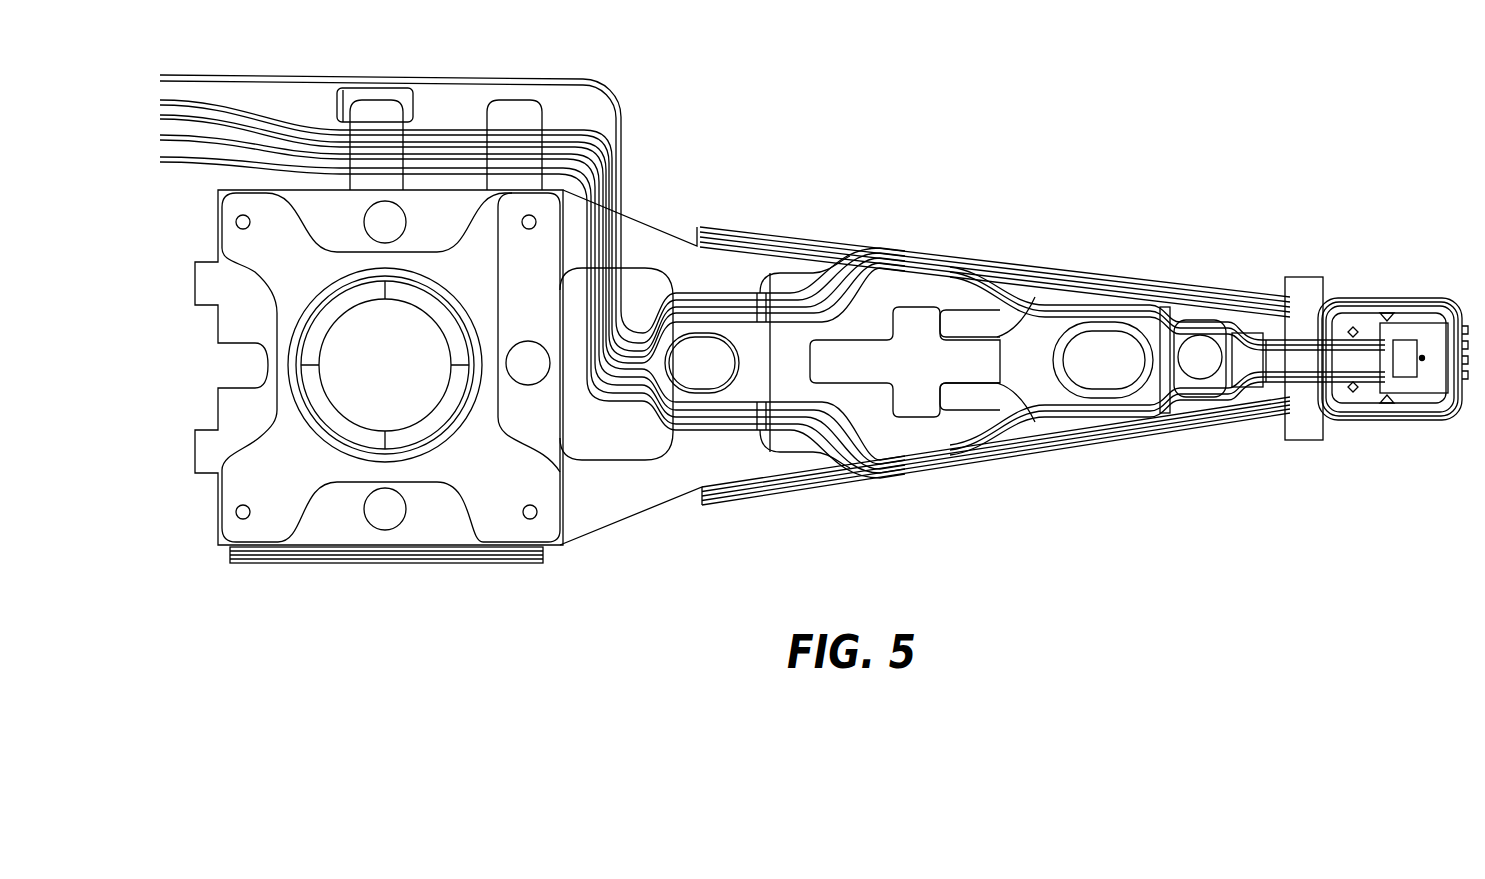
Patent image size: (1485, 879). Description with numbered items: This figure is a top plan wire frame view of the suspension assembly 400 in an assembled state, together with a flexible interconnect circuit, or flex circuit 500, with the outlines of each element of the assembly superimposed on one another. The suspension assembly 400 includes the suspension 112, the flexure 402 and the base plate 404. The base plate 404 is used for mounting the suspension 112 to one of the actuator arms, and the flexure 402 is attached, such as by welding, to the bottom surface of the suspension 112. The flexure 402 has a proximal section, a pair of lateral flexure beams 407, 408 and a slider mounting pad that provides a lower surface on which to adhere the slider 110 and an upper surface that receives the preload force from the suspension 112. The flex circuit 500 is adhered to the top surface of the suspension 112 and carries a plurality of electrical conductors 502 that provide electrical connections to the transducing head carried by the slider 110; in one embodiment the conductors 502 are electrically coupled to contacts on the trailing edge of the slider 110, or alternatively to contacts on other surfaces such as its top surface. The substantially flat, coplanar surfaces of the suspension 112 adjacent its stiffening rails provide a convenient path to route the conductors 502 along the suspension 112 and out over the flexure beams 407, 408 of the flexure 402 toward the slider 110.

The slider 110 is at (1370, 383).
The suspension 112 is at (787, 237).
The suspension assembly 400 is at (997, 188).
The flexure 402 is at (1293, 277).
The base plate 404 is at (565, 498).
The lateral flexure beam 407 is at (1447, 303).
The lateral flexure beam 408 is at (1457, 412).
The flexible interconnect circuit 500 is at (630, 147).
The electrical conductors 502 is at (903, 293).